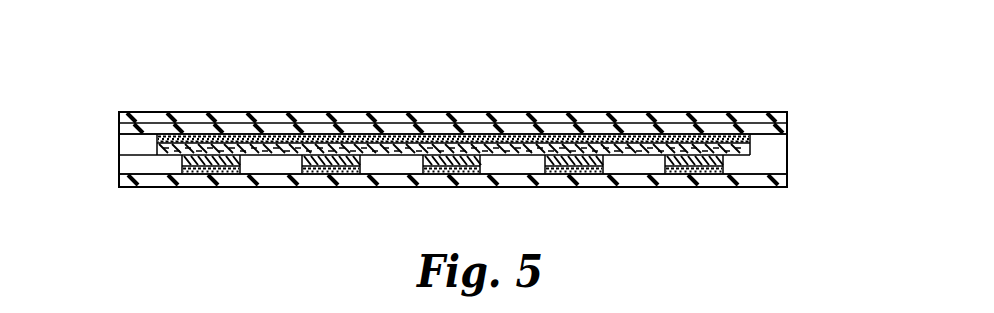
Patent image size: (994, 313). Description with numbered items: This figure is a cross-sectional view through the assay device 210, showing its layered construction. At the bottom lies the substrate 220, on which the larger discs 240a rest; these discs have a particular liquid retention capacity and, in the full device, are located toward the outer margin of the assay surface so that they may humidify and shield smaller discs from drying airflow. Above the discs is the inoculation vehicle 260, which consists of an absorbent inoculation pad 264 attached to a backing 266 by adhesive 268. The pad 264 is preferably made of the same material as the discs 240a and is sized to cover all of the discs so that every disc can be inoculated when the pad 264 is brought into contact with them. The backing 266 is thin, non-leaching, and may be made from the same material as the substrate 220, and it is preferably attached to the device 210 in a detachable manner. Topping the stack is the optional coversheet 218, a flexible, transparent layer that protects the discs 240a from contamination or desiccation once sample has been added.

The assay device 210 is at (722, 66).
The coversheet 218 is at (633, 122).
The substrate 220 is at (230, 181).
The inoculation vehicle 260 is at (791, 125).
The inoculation pad 264 is at (157, 148).
The backing 266 is at (428, 136).
The adhesive 268 is at (502, 143).
The larger discs 240a is at (610, 171).